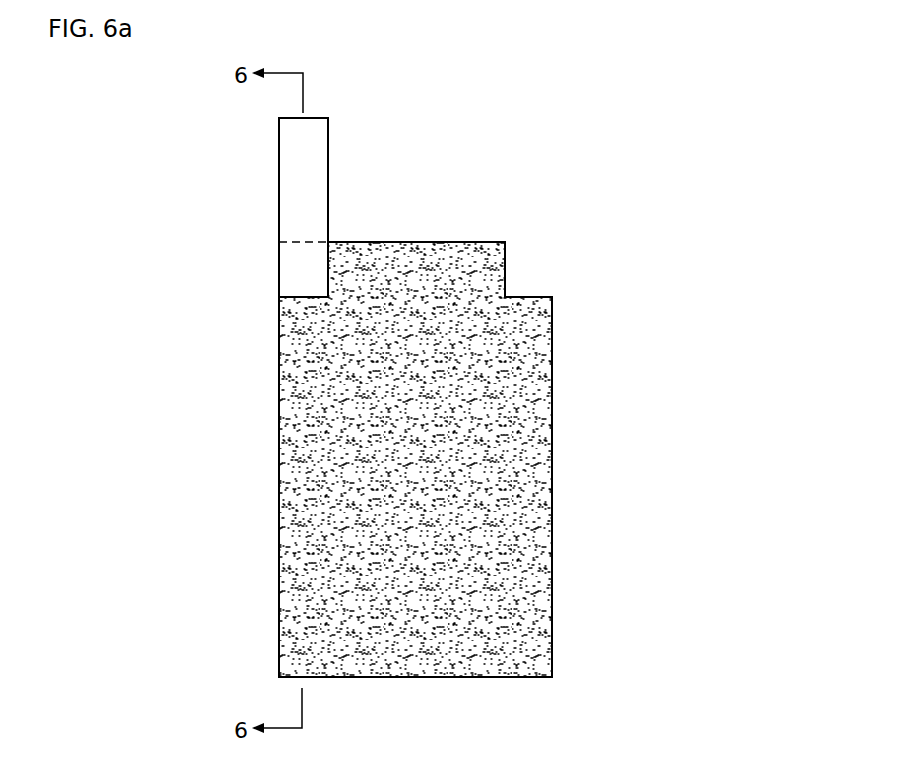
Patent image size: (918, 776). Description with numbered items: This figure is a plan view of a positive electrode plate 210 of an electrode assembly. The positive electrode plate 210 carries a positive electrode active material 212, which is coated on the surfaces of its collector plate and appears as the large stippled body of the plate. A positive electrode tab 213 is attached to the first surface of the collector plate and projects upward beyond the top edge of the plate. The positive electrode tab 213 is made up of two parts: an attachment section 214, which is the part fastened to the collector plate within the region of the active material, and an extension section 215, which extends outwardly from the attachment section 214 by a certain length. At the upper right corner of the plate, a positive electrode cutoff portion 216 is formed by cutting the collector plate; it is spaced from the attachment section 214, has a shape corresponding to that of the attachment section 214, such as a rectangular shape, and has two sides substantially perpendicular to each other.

The positive electrode plate 210 is at (614, 147).
The positive electrode active material 212 is at (279, 444).
The positive electrode tab 213 is at (195, 165).
The attachment section 214 is at (283, 256).
The extension section 215 is at (285, 173).
The positive electrode cutoff portion 216 is at (513, 283).